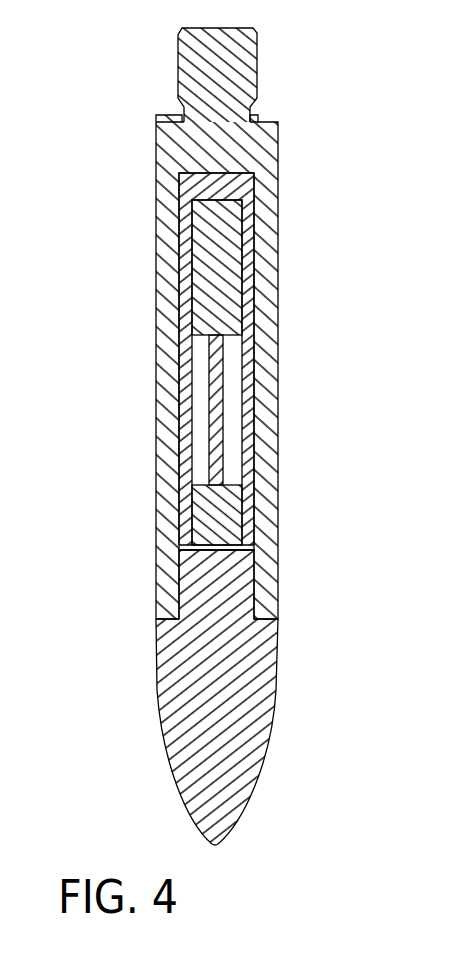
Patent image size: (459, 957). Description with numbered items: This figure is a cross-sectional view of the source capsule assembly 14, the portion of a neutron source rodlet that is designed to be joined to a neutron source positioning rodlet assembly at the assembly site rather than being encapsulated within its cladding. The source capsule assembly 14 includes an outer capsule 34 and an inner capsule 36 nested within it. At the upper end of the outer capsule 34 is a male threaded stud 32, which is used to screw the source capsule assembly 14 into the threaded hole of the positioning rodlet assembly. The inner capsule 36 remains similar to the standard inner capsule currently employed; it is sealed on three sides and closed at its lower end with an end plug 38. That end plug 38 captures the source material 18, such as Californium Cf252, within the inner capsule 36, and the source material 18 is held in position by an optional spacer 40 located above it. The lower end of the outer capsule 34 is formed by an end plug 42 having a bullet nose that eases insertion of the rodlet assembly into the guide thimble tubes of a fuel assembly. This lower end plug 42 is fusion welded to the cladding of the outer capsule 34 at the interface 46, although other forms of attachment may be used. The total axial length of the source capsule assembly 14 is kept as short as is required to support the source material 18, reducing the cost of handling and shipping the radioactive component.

The source capsule assembly 14 is at (220, 436).
The source material 18 is at (210, 383).
The threaded stud 32 is at (175, 80).
The outer capsule 34 is at (156, 176).
The inner capsule 36 is at (185, 286).
The end plug 38 is at (198, 517).
The spacer 40 is at (233, 243).
The end plug 42 is at (183, 715).
The interface 46 is at (277, 619).